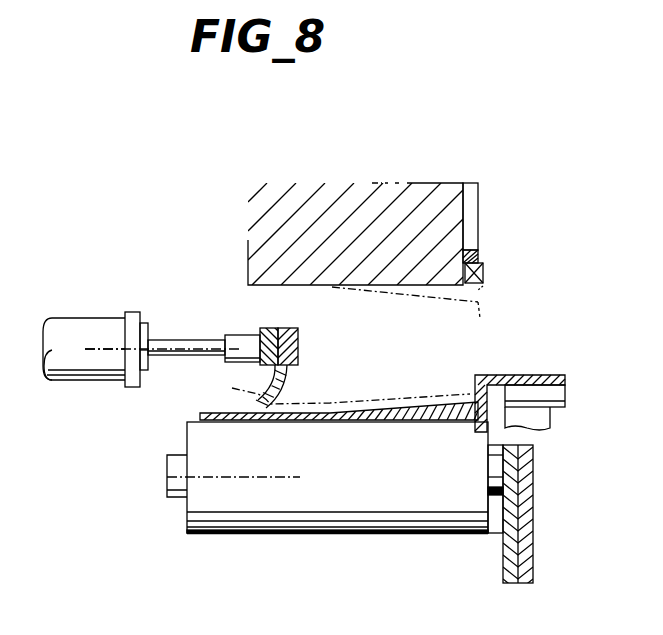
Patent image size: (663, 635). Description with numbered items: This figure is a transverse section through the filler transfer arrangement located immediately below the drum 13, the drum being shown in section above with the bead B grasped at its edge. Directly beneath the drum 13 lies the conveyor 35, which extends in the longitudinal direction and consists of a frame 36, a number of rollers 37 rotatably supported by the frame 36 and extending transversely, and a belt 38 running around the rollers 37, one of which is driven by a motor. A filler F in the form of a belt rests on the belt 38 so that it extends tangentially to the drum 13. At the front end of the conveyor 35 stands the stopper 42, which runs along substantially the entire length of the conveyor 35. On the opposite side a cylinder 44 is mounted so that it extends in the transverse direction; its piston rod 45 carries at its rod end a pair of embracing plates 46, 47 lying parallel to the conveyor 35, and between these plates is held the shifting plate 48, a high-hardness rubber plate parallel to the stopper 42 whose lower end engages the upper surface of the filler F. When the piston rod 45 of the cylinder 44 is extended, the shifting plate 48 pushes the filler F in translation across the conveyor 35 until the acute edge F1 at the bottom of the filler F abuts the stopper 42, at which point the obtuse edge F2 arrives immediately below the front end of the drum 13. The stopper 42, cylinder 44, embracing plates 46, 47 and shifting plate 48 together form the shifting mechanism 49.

The drum 13 is at (435, 192).
The bead B is at (484, 273).
The filler F is at (428, 302).
The acute edge F1 is at (480, 318).
The obtuse edge F2 is at (484, 287).
The cylinder 44 is at (68, 320).
The shifting mechanism 49 is at (98, 305).
The piston rod 45 is at (192, 342).
The embracing plate 46 is at (268, 330).
The embracing plate 47 is at (292, 330).
The shifting plate 48 is at (288, 387).
The belt 38 is at (350, 425).
The stopper 42 is at (515, 376).
The roller 37 is at (312, 516).
The conveyor 35 is at (398, 537).
The frame 36 is at (508, 570).